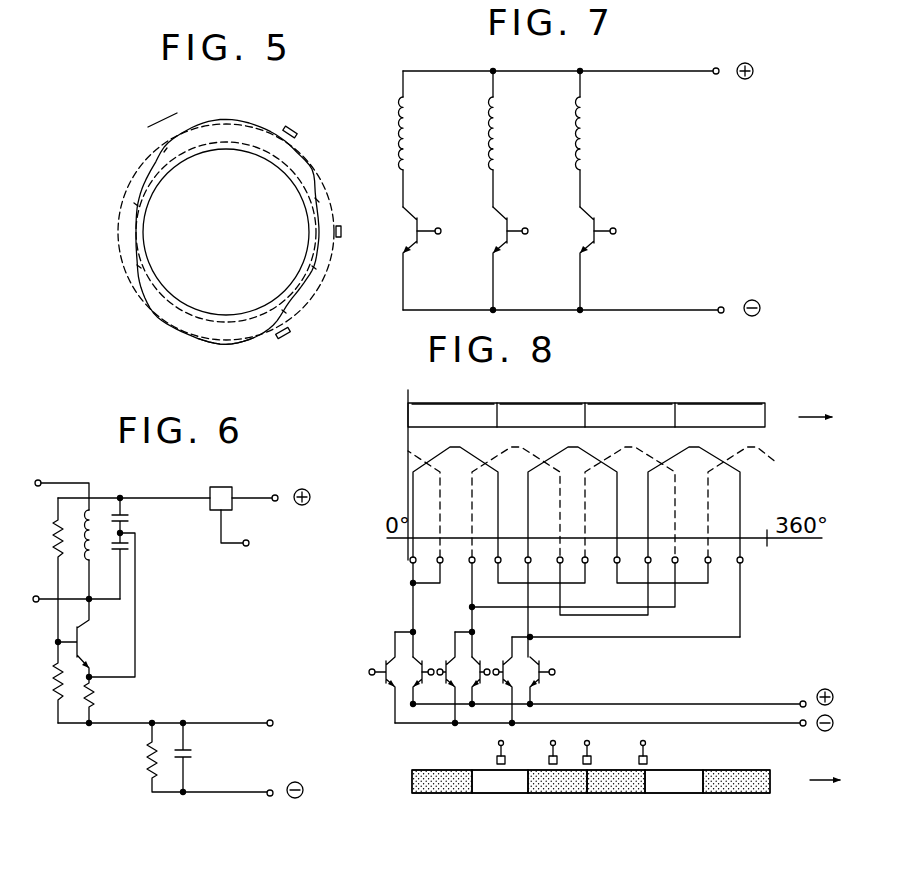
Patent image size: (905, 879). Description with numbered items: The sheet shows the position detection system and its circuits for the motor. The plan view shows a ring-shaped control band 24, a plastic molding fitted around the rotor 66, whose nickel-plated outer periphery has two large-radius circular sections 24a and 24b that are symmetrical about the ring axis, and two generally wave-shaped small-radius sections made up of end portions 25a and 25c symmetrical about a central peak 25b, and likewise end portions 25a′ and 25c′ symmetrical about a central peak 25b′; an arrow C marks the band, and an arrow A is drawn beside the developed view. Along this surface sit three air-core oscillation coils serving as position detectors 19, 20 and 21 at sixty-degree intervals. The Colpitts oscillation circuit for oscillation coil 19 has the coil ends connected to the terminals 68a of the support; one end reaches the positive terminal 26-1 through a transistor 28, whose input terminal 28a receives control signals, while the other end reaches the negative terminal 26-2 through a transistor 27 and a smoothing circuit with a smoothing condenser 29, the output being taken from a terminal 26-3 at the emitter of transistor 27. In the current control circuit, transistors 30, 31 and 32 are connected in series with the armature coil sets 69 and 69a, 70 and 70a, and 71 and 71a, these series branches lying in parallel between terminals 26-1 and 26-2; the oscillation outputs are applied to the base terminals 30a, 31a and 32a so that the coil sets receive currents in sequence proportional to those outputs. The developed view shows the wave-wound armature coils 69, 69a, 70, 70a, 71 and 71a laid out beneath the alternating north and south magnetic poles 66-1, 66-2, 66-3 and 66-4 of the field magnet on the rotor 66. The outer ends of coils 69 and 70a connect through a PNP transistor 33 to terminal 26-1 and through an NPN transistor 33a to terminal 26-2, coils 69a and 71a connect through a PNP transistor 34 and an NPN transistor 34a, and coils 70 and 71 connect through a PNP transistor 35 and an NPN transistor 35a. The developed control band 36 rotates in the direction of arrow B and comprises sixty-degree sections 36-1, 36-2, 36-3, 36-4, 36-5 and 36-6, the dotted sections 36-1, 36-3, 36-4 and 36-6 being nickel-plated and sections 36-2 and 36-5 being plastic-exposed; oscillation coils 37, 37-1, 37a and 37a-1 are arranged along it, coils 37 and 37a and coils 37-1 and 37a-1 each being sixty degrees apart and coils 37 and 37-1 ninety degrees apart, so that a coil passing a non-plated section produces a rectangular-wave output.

In FIG. 5, the oscillation coil 19 is at (288, 340).
In FIG. 6, the oscillation coil 19 is at (85, 553).
In FIG. 5, the oscillation coil 20 is at (340, 238).
In FIG. 5, the oscillation coil 21 is at (293, 125).
In FIG. 5, the control band 24 is at (193, 158).
In FIG. 5, the circular section 24a is at (215, 120).
In FIG. 5, the circular section 24b is at (172, 341).
In FIG. 5, the wave-shaped section 25a is at (165, 152).
In FIG. 5, the wave-shaped section 25b is at (134, 204).
In FIG. 5, the wave-shaped section 25c is at (137, 266).
In FIG. 5, the wave-shaped section 25a′ is at (285, 312).
In FIG. 5, the wave-shaped section 25b′ is at (314, 268).
In FIG. 5, the wave-shaped section 25c′ is at (317, 200).
In FIG. 7, the positive terminal 26-1 is at (718, 75).
In FIG. 6, the positive terminal 26-1 is at (277, 494).
In FIG. 8, the positive terminal 26-1 is at (803, 700).
In FIG. 7, the negative terminal 26-2 is at (720, 306).
In FIG. 6, the negative terminal 26-2 is at (271, 797).
In FIG. 8, the negative terminal 26-2 is at (803, 727).
In FIG. 6, the terminal 26-3 is at (273, 723).
In FIG. 6, the transistor 27 is at (85, 645).
In FIG. 6, the transistor 28 is at (210, 507).
In FIG. 6, the terminal 28a is at (246, 547).
In FIG. 6, the smoothing condenser 29 is at (195, 755).
In FIG. 7, the transistor 30 is at (402, 232).
In FIG. 7, the transistor 31 is at (494, 237).
In FIG. 7, the transistor 32 is at (582, 233).
In FIG. 7, the base terminal 30a is at (440, 226).
In FIG. 7, the base terminal 31a is at (526, 226).
In FIG. 7, the base terminal 32a is at (614, 226).
In FIG. 8, the PNP transistor 33 is at (412, 662).
In FIG. 8, the PNP transistor 34 is at (468, 662).
In FIG. 8, the PNP transistor 35 is at (528, 672).
In FIG. 8, the NPN transistor 33a is at (392, 682).
In FIG. 8, the NPN transistor 34a is at (450, 683).
In FIG. 8, the NPN transistor 35a is at (510, 677).
In FIG. 8, the control band 36 is at (571, 806).
In FIG. 8, the nickel-plated section 36-1 is at (427, 794).
In FIG. 8, the non-plated section 36-2 is at (497, 794).
In FIG. 8, the nickel-plated section 36-3 is at (557, 794).
In FIG. 8, the nickel-plated section 36-4 is at (617, 794).
In FIG. 8, the non-plated section 36-5 is at (678, 794).
In FIG. 8, the nickel-plated section 36-6 is at (735, 794).
In FIG. 8, the oscillation coil 37 is at (593, 757).
In FIG. 8, the oscillation coil 37-1 is at (497, 757).
In FIG. 8, the oscillation coil 37a is at (650, 757).
In FIG. 8, the oscillation coil 37a-1 is at (550, 757).
In FIG. 8, the rotor 66 is at (742, 382).
In FIG. 8, the magnetic pole 66-1 is at (433, 402).
In FIG. 8, the magnetic pole 66-2 is at (517, 402).
In FIG. 8, the magnetic pole 66-3 is at (600, 403).
In FIG. 8, the magnetic pole 66-4 is at (685, 405).
In FIG. 6, the terminals 68a is at (35, 482).
In FIG. 7, the armature coil 69 is at (410, 115).
In FIG. 8, the armature coil 69 is at (465, 458).
In FIG. 8, the armature coil 69a is at (643, 452).
In FIG. 7, the armature coil 70 is at (498, 125).
In FIG. 8, the armature coil 70 is at (583, 452).
In FIG. 8, the armature coil 70a is at (775, 440).
In FIG. 7, the armature coil 71 is at (585, 127).
In FIG. 8, the armature coil 71 is at (710, 440).
In FIG. 8, the armature coil 71a is at (532, 440).
In FIG. 8, the direction A is at (805, 415).
In FIG. 8, the arrow B is at (817, 783).
In FIG. 5, the rotation direction C is at (170, 115).